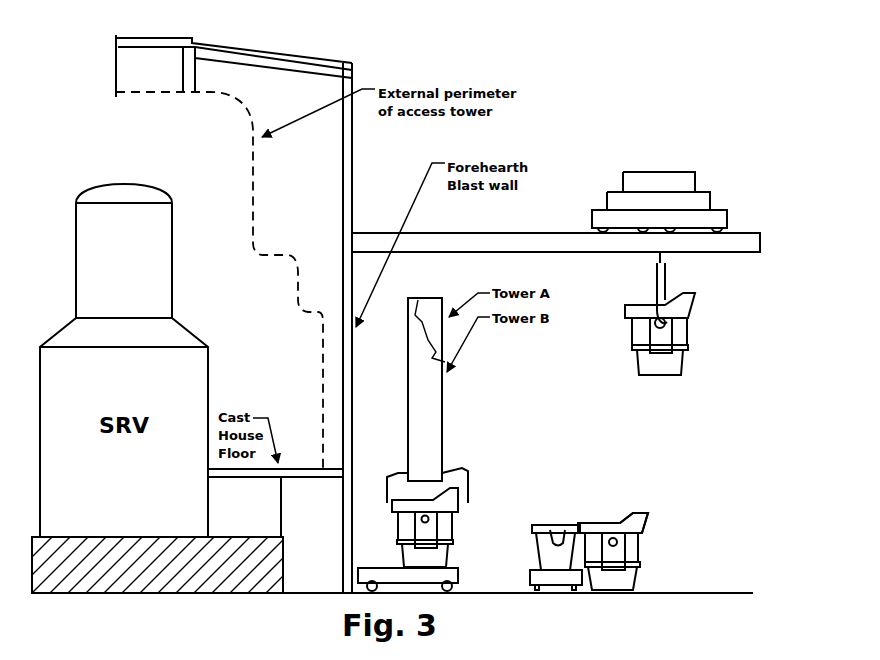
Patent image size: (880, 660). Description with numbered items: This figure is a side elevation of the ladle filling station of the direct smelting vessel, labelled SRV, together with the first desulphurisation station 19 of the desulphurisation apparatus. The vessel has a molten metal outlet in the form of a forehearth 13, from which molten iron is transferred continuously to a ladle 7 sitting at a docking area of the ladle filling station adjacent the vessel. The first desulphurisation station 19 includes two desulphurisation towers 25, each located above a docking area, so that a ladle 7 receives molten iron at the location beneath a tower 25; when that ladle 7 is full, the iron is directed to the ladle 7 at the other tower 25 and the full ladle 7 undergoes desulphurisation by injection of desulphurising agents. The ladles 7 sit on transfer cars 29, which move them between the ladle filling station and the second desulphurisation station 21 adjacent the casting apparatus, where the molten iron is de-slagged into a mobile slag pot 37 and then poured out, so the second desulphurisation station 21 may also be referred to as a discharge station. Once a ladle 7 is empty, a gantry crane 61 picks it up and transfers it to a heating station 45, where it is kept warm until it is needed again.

The ladle 7 is at (445, 527).
The forehearth 13 is at (266, 500).
The first desulphurisation station 19 is at (468, 428).
The second desulphurisation station 21 is at (626, 433).
The desulphurisation tower 25 is at (458, 282).
The transfer car 29 is at (452, 575).
The slag pot 37 is at (556, 530).
The heating station 45 is at (660, 528).
The gantry crane 61 is at (716, 214).